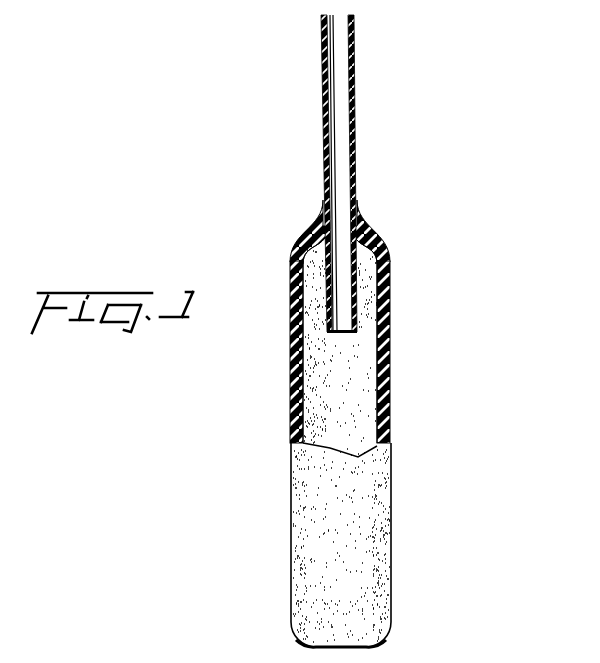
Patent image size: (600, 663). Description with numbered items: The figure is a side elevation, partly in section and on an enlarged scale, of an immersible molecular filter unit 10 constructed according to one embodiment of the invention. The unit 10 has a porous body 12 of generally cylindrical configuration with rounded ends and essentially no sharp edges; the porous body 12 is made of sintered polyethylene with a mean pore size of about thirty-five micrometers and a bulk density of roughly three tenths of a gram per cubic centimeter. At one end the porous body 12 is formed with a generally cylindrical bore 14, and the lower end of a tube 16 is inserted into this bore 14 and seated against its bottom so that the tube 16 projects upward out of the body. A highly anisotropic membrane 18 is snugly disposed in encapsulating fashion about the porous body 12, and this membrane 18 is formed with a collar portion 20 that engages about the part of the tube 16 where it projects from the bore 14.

The molecular filter unit 10 is at (280, 242).
The porous body 12 is at (298, 405).
The bore 14 is at (384, 268).
The tube 16 is at (323, 97).
The anisotropic membrane 18 is at (387, 335).
The collar portion 20 is at (365, 219).